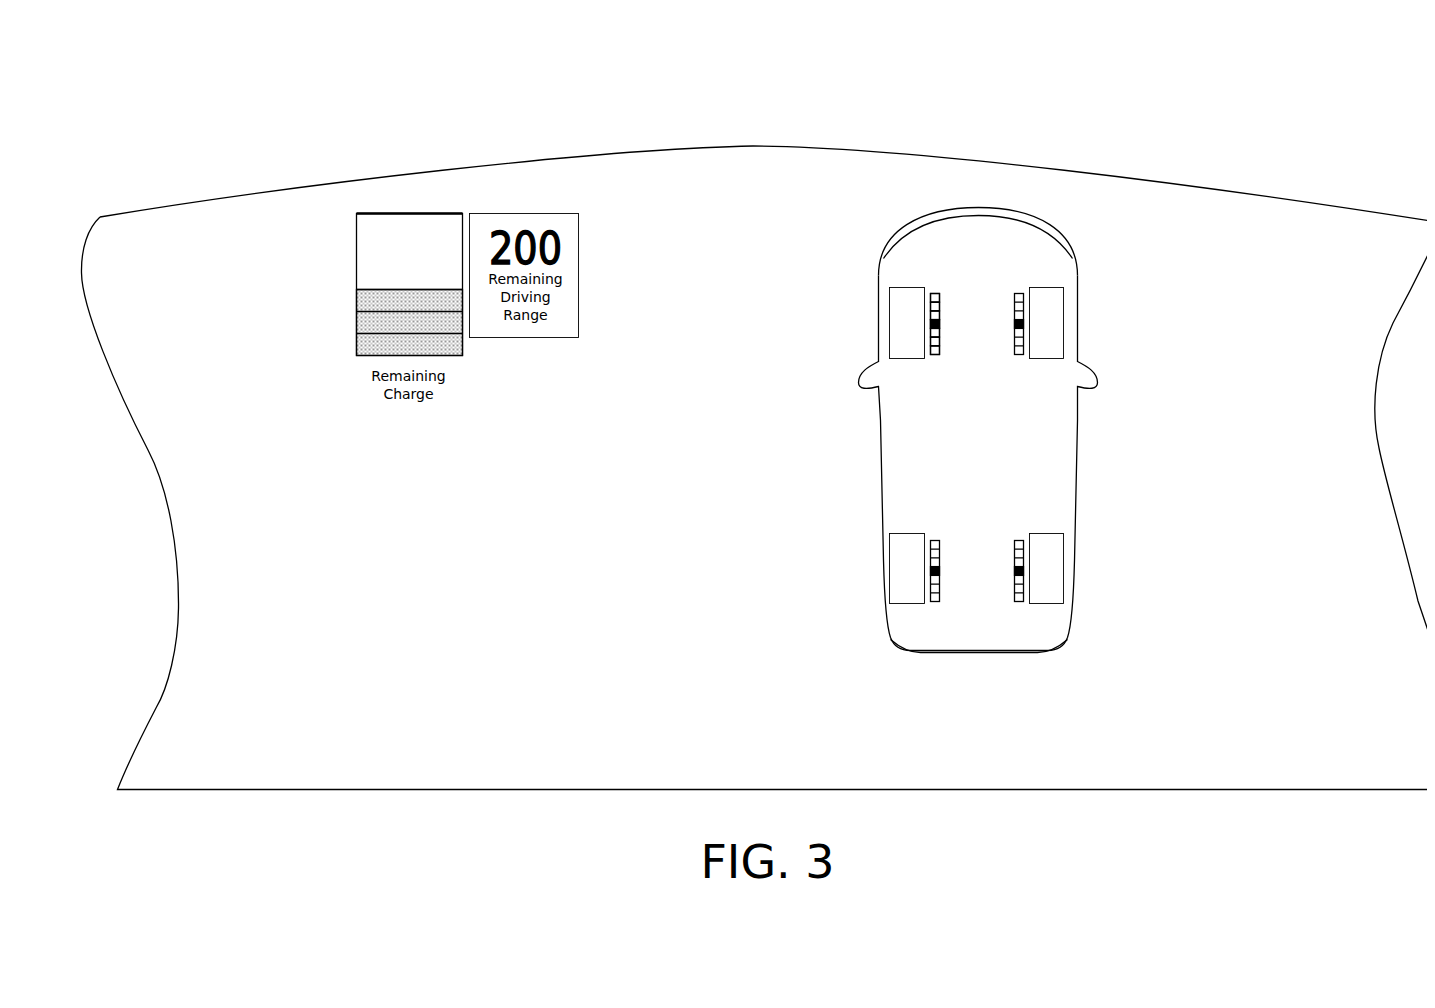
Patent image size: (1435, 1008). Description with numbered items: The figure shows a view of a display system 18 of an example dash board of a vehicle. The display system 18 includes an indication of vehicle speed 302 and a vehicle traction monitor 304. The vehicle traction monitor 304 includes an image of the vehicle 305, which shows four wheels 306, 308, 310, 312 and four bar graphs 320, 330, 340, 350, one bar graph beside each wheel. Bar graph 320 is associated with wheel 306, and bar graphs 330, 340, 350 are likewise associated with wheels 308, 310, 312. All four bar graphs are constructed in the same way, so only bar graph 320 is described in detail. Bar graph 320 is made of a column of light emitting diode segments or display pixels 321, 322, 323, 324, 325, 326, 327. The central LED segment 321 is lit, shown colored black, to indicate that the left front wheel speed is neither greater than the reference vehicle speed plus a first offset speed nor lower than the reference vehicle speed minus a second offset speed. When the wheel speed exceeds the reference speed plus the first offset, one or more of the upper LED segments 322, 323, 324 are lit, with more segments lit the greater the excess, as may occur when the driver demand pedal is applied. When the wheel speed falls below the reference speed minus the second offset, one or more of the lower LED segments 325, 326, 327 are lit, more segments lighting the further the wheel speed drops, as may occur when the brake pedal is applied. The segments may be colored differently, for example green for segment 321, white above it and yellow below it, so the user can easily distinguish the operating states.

The display system 18 is at (362, 70).
The indication of vehicle speed 302 is at (712, 339).
The vehicle traction monitor 304 is at (972, 404).
The image of the vehicle 305 is at (1003, 671).
The wheel 306 is at (884, 302).
The wheel 308 is at (1035, 280).
The wheel 310 is at (899, 524).
The wheel 312 is at (1030, 524).
The bar graph 320 is at (983, 329).
The LED segment 321 is at (952, 317).
The LED segment 322 is at (949, 306).
The LED segment 323 is at (950, 302).
The LED segment 324 is at (926, 284).
The LED segment 325 is at (947, 334).
The LED segment 326 is at (946, 342).
The LED segment 327 is at (939, 366).
The bar graph 330 is at (1014, 366).
The bar graph 340 is at (929, 611).
The bar graph 350 is at (1022, 612).